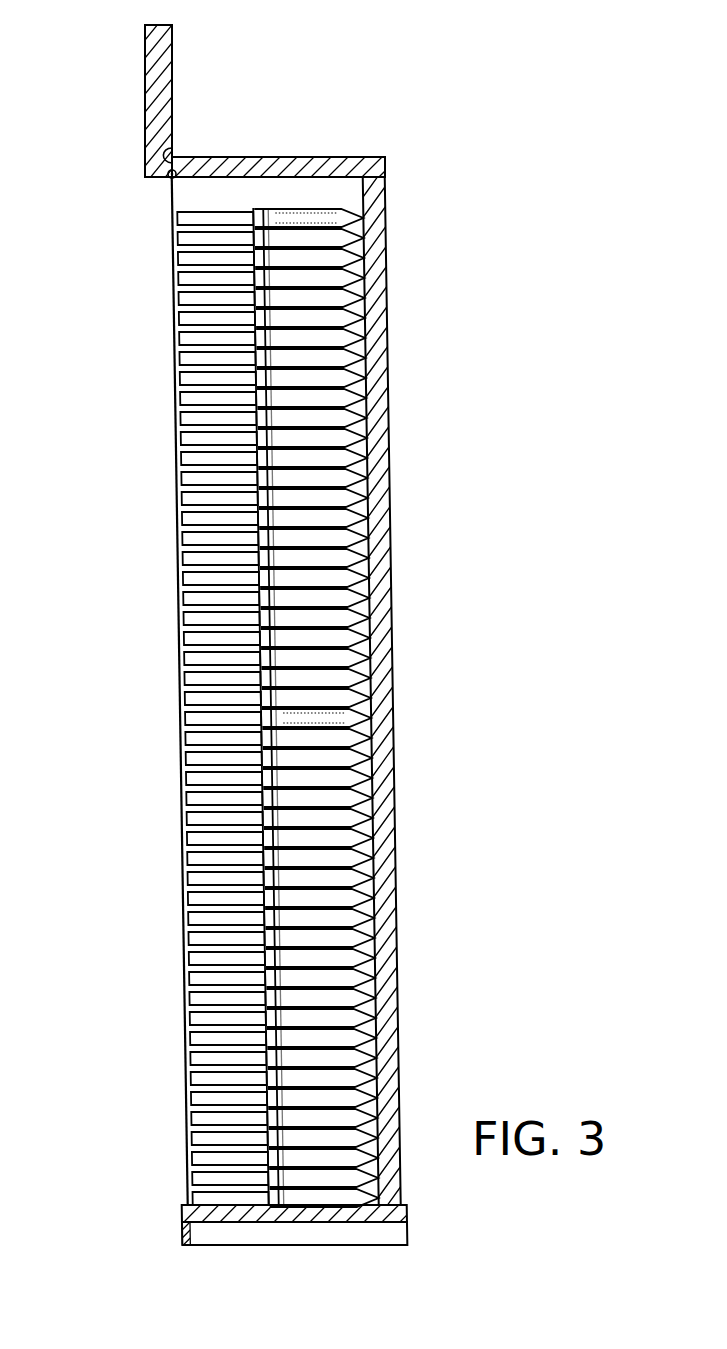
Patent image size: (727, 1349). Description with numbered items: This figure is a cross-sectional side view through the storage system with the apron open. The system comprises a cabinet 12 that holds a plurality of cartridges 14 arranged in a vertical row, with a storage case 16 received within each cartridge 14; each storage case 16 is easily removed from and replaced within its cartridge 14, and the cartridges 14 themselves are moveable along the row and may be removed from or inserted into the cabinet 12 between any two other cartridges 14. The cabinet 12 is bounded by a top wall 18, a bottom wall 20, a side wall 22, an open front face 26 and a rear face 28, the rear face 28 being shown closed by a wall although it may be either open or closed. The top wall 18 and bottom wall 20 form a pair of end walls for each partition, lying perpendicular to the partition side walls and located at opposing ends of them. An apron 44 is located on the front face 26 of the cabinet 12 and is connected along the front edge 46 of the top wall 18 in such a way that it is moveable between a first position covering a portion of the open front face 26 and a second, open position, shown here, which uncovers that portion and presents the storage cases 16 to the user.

The cabinet 12 is at (412, 518).
The cartridge 14 is at (366, 194).
The storage case 16 is at (186, 214).
The top wall 18 is at (283, 153).
The bottom wall 20 is at (362, 1226).
The side wall 22 is at (324, 190).
The open front face 26 is at (164, 191).
The rear face 28 is at (388, 325).
The apron 44 is at (141, 101).
The front edge 46 is at (174, 146).